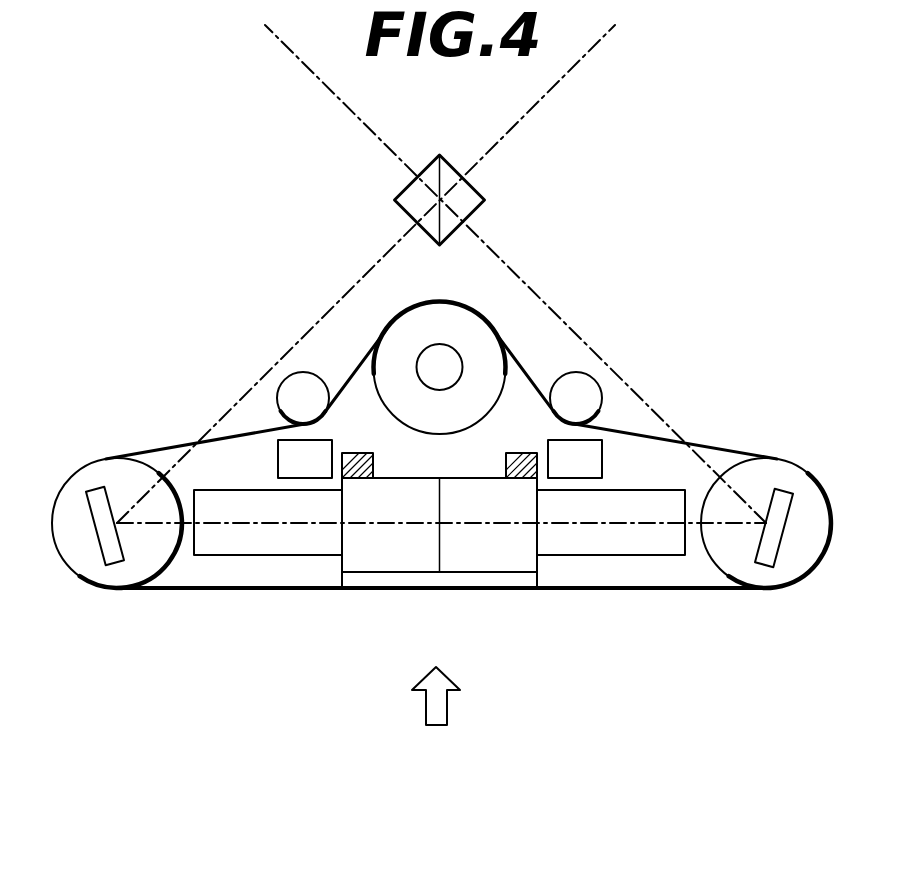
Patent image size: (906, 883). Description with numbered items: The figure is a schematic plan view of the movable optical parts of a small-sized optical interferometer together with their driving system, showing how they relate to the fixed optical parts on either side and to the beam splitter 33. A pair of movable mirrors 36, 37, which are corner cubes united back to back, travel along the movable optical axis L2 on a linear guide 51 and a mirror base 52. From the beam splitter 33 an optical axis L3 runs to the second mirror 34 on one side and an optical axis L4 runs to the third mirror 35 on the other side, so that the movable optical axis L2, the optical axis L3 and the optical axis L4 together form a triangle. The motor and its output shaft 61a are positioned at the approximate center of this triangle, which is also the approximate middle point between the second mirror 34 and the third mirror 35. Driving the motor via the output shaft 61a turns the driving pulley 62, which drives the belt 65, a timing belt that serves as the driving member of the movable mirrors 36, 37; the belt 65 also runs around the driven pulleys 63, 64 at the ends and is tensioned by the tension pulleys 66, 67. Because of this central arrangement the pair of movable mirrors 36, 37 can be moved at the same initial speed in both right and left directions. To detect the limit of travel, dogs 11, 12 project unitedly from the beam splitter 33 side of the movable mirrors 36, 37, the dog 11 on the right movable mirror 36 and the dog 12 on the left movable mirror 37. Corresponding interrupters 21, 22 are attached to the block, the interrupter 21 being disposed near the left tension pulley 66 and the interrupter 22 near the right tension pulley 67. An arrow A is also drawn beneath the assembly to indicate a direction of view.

The beam splitter 33 is at (396, 198).
The output shaft 61a is at (438, 360).
The driving pulley 62 is at (472, 327).
The tension pulley 66 is at (312, 388).
The tension pulley 67 is at (567, 387).
The driven pulley 63 is at (77, 510).
The driven pulley 64 is at (813, 513).
The third mirror 35 is at (112, 564).
The second mirror 34 is at (760, 567).
The interrupter 21 is at (281, 462).
The interrupter 22 is at (595, 460).
The dog 11 is at (520, 452).
The dog 12 is at (360, 452).
The linear guide 51 is at (263, 546).
The mirror base 52 is at (473, 578).
The movable mirror 37 is at (397, 557).
The movable mirror 36 is at (527, 560).
The belt 65 is at (327, 592).
The movable optical axis L2 is at (645, 527).
The optical axis L3 is at (600, 360).
The optical axis L4 is at (313, 327).
The direction arrow A is at (436, 719).